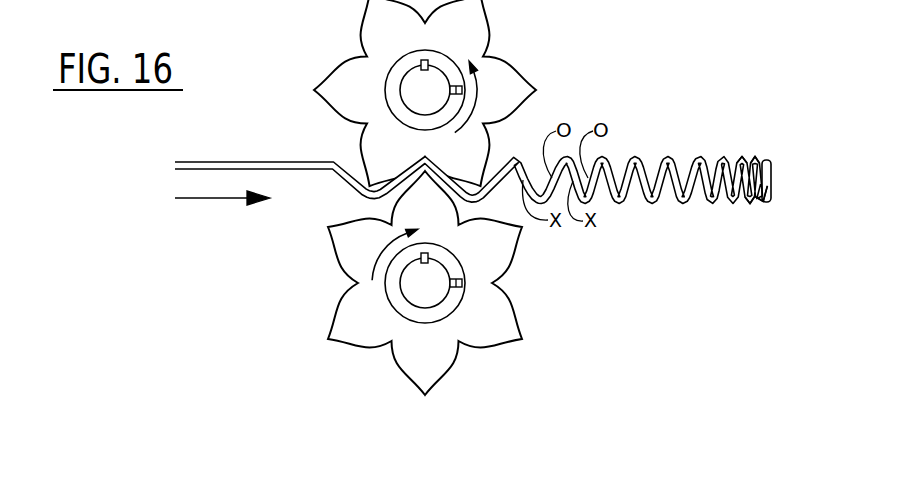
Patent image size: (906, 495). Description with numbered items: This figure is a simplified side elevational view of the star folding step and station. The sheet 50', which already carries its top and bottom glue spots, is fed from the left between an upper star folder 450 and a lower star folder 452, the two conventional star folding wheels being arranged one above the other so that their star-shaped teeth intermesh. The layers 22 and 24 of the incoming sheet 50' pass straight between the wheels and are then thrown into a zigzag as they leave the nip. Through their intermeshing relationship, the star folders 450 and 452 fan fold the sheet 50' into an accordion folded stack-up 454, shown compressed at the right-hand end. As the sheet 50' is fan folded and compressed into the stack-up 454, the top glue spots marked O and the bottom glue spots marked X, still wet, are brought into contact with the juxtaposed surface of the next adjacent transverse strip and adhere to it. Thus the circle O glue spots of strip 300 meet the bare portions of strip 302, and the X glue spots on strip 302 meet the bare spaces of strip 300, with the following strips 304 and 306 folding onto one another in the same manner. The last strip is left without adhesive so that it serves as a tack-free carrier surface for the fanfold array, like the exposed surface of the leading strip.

The sheet 50' is at (471, 160).
The first layer 22 is at (278, 162).
The second layer 24 is at (292, 170).
The star folder 450 is at (506, 34).
The star folder 452 is at (541, 254).
The strip 300 is at (769, 183).
The strip 302 is at (756, 198).
The fold 304 is at (755, 200).
The pleat 306 is at (747, 162).
The accordion folded stack-up 454 is at (756, 162).